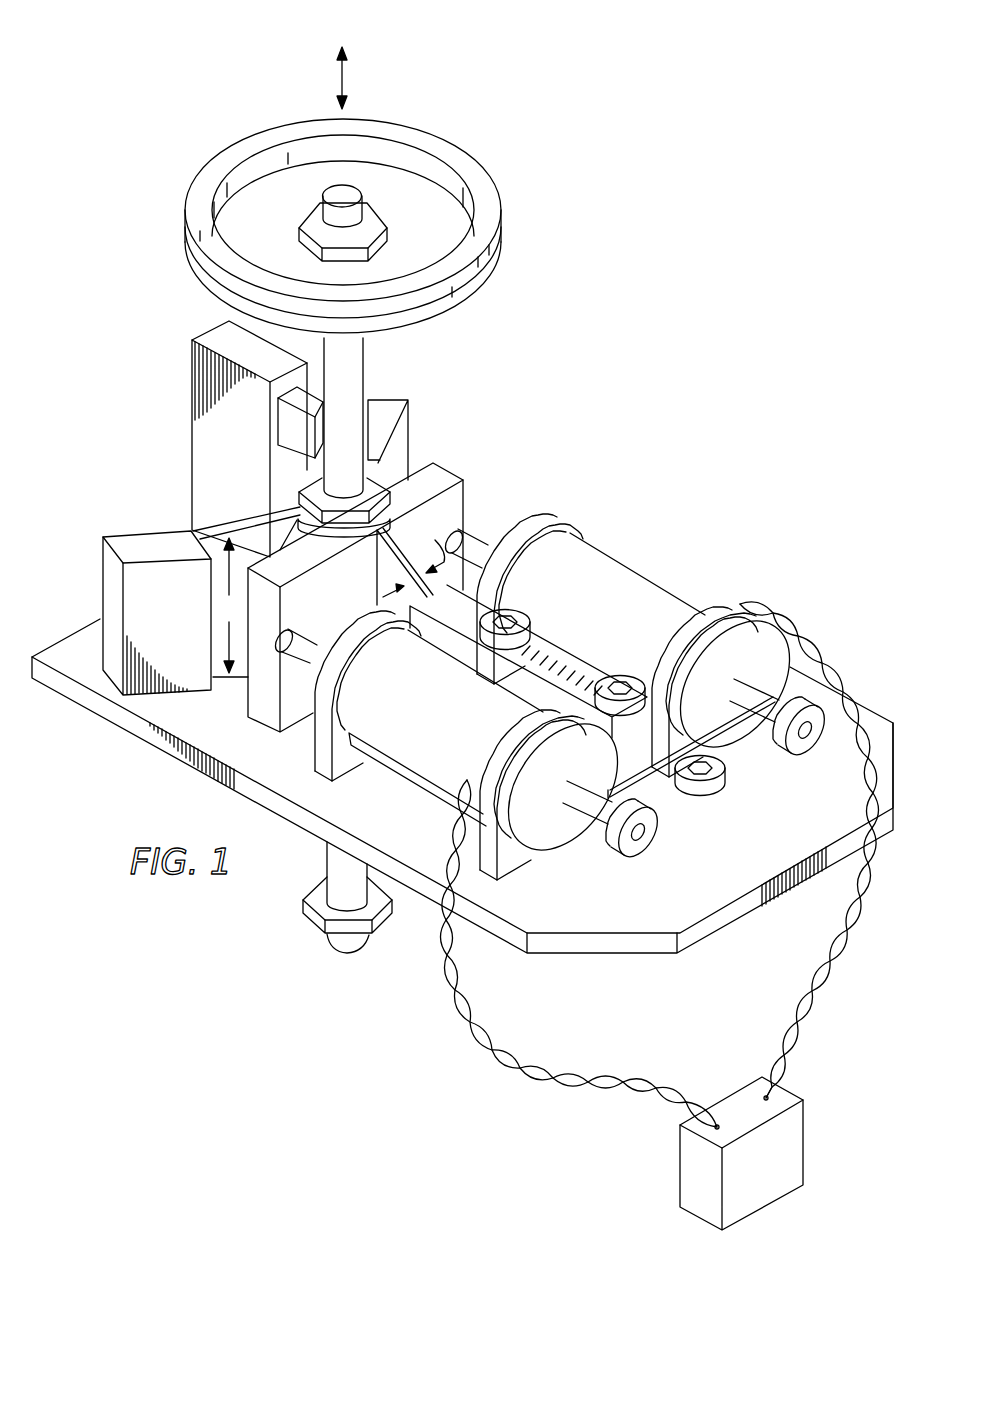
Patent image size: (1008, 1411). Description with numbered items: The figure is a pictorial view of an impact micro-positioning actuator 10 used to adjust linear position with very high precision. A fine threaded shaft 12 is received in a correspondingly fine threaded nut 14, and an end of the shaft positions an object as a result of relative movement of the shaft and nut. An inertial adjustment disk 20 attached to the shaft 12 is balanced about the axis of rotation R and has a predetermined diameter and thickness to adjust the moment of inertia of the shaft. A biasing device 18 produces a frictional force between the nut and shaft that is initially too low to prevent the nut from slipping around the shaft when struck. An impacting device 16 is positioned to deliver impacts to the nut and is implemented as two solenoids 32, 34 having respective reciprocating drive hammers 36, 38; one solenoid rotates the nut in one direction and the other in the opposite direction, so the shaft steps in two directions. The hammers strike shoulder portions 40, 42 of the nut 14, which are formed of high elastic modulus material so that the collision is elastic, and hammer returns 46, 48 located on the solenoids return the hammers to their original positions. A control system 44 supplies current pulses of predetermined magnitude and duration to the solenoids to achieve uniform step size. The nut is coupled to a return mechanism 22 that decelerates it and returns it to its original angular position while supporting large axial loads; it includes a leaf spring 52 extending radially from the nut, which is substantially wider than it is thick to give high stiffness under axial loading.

The impact micro-positioning actuator 10 is at (186, 96).
The fine threaded shaft 12 is at (366, 357).
The fine threaded nut 14 is at (386, 471).
The impacting device 16 is at (667, 502).
The biasing device 18 is at (294, 432).
The inertial adjustment disk 20 is at (475, 156).
The return mechanism 22 is at (91, 484).
The solenoid 32 is at (418, 731).
The solenoid 34 is at (618, 631).
The drive hammer 36 is at (309, 630).
The drive hammer 38 is at (476, 530).
The shoulder portion 40 is at (248, 705).
The shoulder portion 42 is at (455, 470).
The control system 44 is at (749, 1176).
The hammer return 46 is at (648, 850).
The hammer return 48 is at (812, 752).
The leaf spring 52 is at (250, 530).